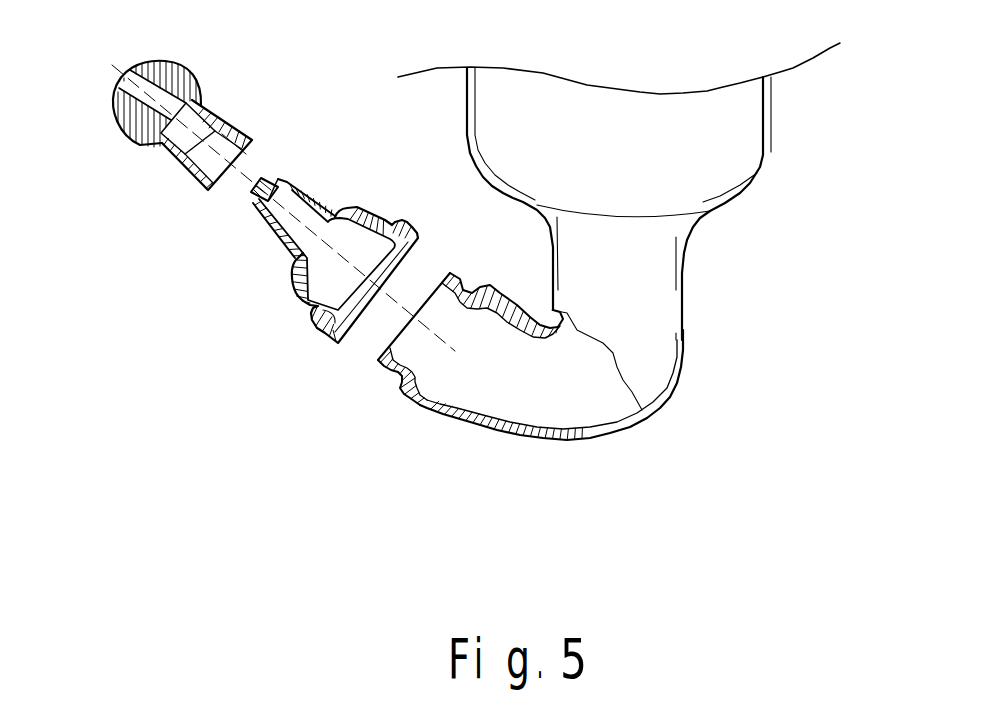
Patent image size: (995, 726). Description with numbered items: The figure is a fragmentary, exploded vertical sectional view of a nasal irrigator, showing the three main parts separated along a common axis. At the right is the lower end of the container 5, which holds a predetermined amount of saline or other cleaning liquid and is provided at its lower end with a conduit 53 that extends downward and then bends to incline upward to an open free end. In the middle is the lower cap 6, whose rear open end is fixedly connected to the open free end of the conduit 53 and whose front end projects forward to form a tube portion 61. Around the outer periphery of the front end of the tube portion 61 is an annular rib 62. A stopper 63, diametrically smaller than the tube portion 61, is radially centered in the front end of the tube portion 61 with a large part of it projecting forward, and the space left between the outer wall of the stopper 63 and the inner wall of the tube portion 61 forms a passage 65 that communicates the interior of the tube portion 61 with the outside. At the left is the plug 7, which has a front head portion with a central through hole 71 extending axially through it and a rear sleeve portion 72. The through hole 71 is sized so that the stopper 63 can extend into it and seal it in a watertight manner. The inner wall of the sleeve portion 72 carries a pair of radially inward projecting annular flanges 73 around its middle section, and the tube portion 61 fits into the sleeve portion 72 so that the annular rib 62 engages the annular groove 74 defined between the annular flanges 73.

The container 5 is at (765, 157).
The conduit 53 is at (470, 430).
The lower cap 6 is at (299, 251).
The tube portion 61 is at (280, 240).
The annular rib 62 is at (285, 173).
The stopper 63 is at (262, 180).
The passage 65 is at (252, 205).
The plug 7 is at (165, 112).
The through hole 71 is at (128, 76).
The sleeve portion 72 is at (210, 177).
The annular flanges 73 is at (222, 110).
The annular groove 74 is at (172, 140).